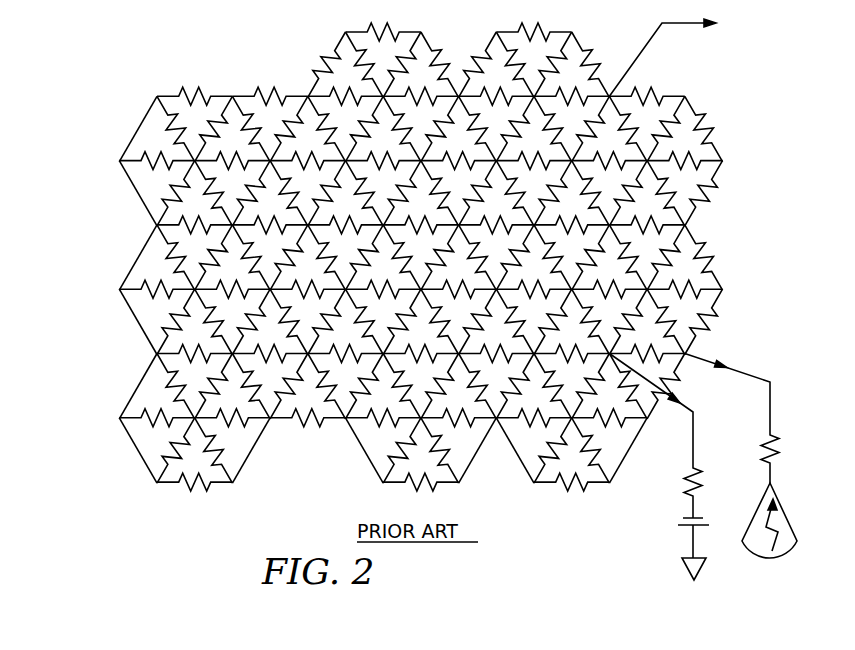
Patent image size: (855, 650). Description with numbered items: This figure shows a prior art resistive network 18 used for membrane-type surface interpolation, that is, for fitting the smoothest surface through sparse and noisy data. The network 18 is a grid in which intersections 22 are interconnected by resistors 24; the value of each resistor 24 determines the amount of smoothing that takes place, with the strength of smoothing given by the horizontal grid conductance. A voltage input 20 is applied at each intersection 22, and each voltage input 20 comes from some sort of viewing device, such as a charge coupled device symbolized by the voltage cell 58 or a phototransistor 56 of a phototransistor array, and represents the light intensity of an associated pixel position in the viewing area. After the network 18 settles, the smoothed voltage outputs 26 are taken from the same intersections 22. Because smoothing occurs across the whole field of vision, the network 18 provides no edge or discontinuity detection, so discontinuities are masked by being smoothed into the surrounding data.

The network 18 is at (283, 70).
The voltage input 20 is at (694, 450).
The intersection 22 is at (653, 163).
The resistor 24 is at (705, 110).
The smoothed voltage output 26 is at (647, 46).
The phototransistor 56 is at (798, 498).
The voltage cell 58 is at (666, 518).